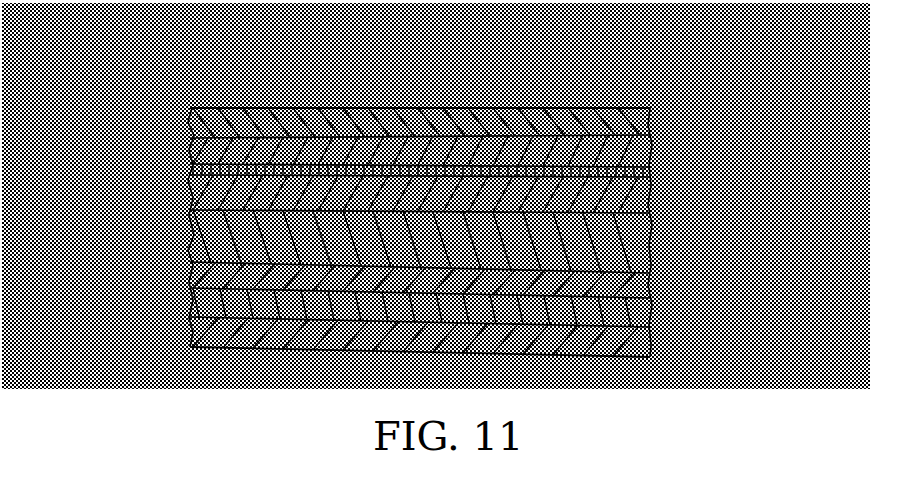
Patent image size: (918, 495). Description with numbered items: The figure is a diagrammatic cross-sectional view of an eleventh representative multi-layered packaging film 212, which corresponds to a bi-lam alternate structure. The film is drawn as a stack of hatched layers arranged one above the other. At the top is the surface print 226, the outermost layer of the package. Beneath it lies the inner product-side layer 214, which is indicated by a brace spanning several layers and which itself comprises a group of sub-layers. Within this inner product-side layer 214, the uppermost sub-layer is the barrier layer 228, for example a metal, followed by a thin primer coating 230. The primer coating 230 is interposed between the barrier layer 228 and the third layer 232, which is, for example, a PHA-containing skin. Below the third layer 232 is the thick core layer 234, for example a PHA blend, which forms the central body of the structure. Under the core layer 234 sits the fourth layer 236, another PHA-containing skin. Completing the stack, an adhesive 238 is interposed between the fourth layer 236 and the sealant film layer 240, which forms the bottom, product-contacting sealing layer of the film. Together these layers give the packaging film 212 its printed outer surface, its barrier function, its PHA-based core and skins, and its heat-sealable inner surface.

The multilayer laminate structure 212 is at (140, 85).
The core layer stack 214 is at (160, 133).
The surface print 226 is at (654, 114).
The barrier layer 228 is at (658, 153).
The primer coating 230 is at (655, 174).
The third layer 232 is at (654, 211).
The core layer 234 is at (648, 236).
The fourth layer 236 is at (652, 286).
The adhesive 238 is at (645, 328).
The sealant film layer 240 is at (652, 356).